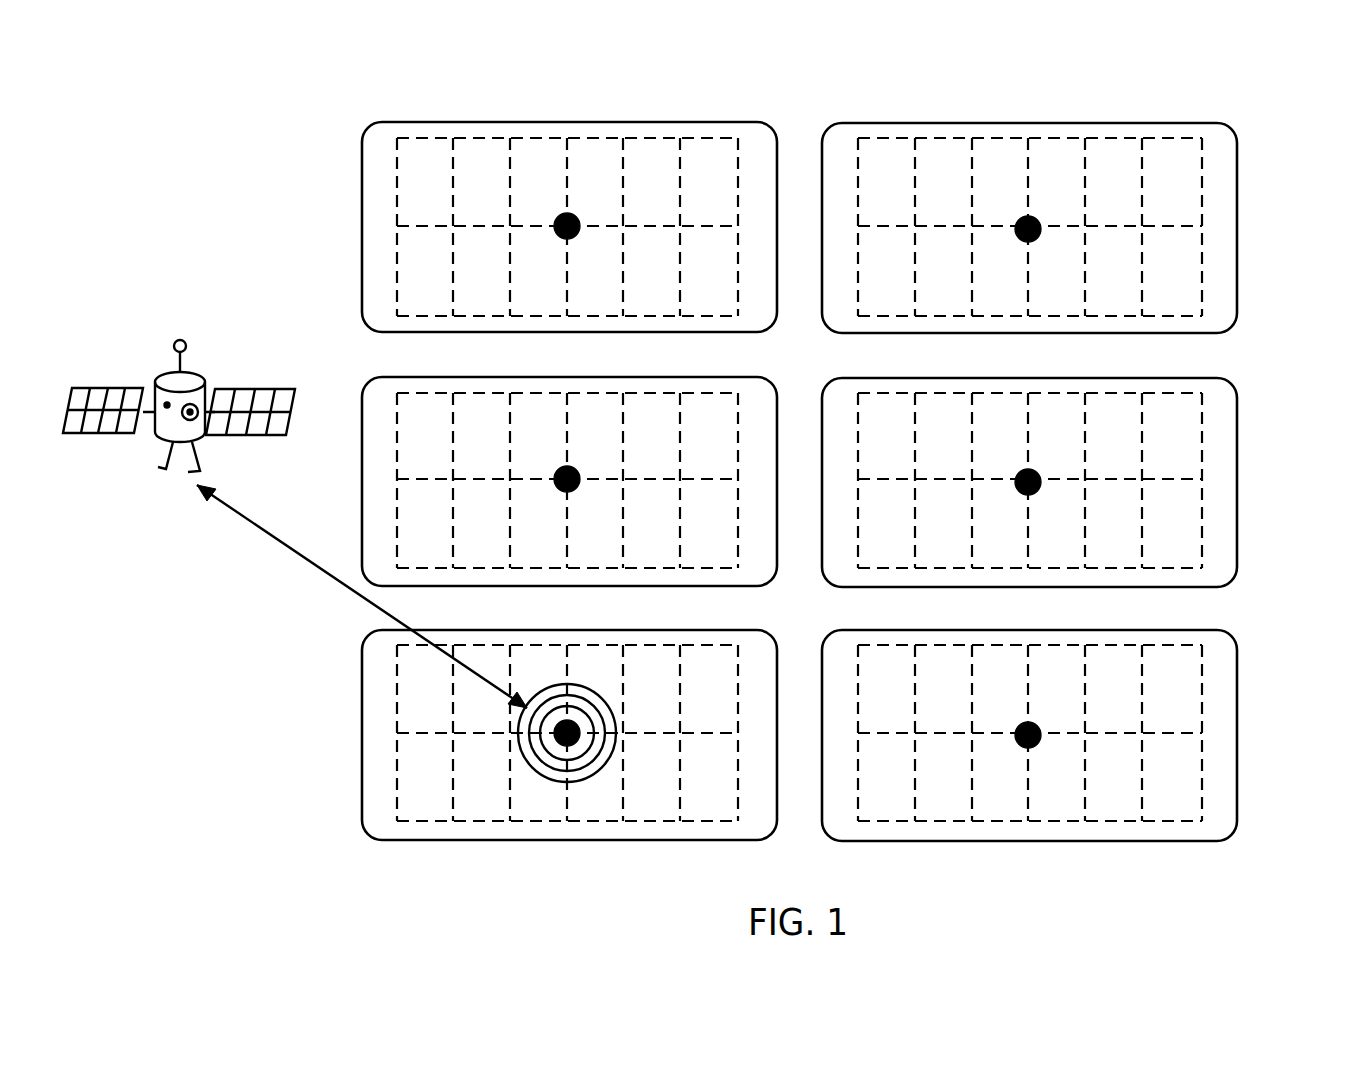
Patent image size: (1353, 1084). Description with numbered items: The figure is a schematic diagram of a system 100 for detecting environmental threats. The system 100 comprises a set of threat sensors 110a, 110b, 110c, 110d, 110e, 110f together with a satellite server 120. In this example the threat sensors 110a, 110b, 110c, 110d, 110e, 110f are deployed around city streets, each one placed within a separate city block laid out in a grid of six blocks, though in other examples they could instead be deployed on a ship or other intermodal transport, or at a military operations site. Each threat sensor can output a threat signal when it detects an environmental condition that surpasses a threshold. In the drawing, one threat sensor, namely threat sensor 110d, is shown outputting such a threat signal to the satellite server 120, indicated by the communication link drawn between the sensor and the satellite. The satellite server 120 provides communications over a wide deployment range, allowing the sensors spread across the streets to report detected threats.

The system 100 is at (1333, 92).
The threat sensor 110a is at (556, 221).
The threat sensor 110b is at (1017, 224).
The threat sensor 110c is at (556, 474).
The threat sensor 110d is at (1017, 477).
The threat sensor 110e is at (541, 691).
The threat sensor 110f is at (1017, 730).
The satellite server 120 is at (163, 367).